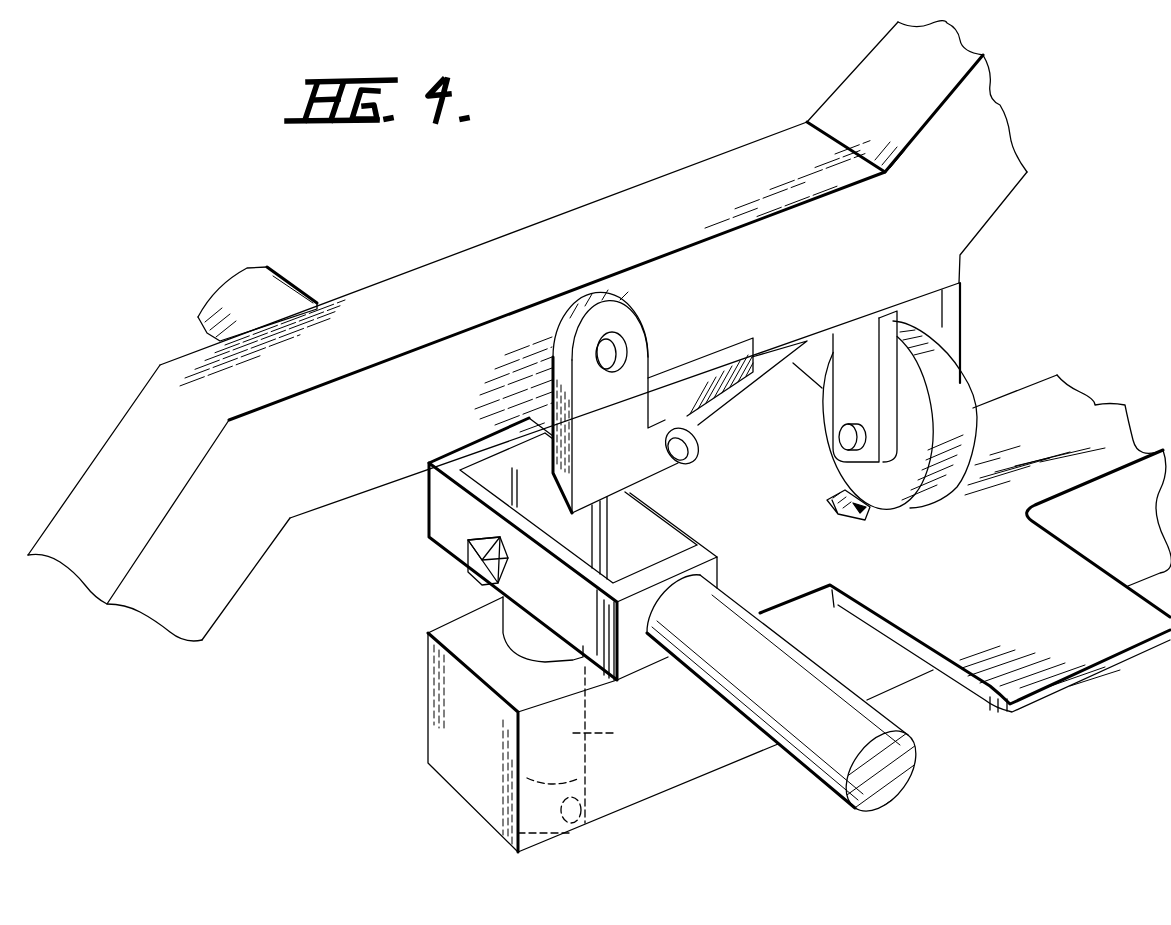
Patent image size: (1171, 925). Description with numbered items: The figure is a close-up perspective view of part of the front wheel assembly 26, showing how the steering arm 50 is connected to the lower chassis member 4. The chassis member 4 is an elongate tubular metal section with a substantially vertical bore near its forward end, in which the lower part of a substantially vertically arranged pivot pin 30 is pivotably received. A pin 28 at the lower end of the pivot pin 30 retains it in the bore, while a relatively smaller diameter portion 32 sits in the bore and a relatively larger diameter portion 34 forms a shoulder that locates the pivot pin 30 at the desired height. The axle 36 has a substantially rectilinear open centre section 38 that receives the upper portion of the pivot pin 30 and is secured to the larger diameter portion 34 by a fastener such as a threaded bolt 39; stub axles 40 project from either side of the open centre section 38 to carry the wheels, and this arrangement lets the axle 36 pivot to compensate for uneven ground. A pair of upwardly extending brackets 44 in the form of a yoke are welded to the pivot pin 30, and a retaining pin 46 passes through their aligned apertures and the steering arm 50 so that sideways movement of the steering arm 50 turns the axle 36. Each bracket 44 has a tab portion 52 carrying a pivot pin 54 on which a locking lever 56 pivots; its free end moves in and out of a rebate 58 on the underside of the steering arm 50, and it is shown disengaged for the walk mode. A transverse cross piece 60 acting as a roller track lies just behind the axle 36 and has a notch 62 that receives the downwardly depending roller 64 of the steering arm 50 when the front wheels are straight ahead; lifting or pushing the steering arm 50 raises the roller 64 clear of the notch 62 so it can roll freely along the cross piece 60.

The lower chassis member 4 is at (1088, 432).
The front wheel assembly 26 is at (693, 788).
The pin 28 is at (582, 822).
The pivot pin 30 is at (507, 658).
The smaller diameter portion 32 is at (613, 735).
The larger diameter portion 34 is at (505, 610).
The axle 36 is at (445, 568).
The open centre section 38 is at (680, 474).
The threaded bolt 39 is at (475, 543).
The stub axles 40 is at (290, 285).
The brackets 44 is at (600, 405).
The retaining pin 46 is at (620, 352).
The steering arm 50 is at (657, 200).
The tab portion 52 is at (697, 445).
The pivot pin 54 is at (688, 460).
The locking lever 56 is at (728, 403).
The rebate 58 is at (757, 352).
The cross piece 60 is at (1047, 617).
The notch 62 is at (850, 520).
The roller 64 is at (948, 382).